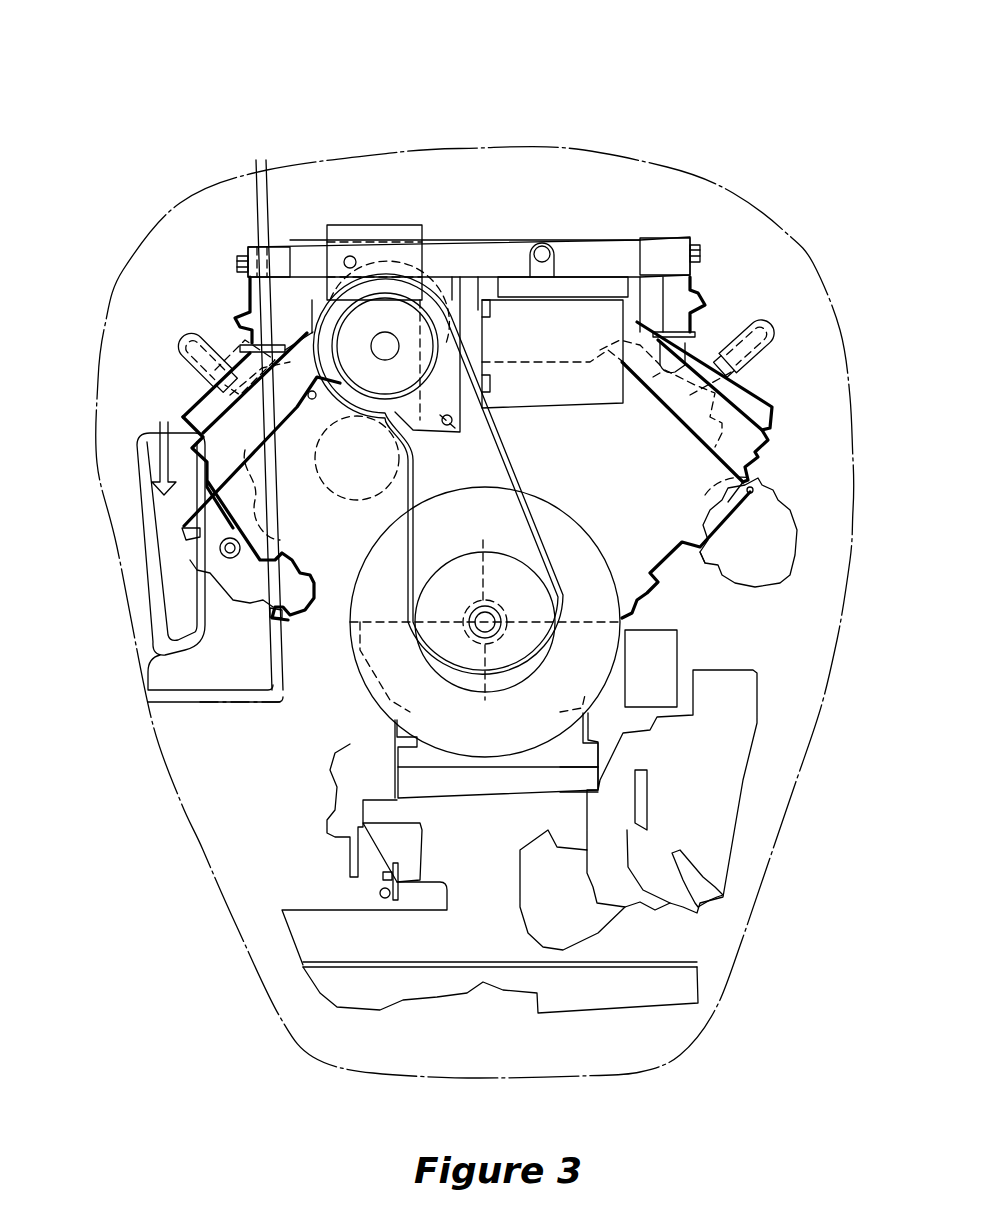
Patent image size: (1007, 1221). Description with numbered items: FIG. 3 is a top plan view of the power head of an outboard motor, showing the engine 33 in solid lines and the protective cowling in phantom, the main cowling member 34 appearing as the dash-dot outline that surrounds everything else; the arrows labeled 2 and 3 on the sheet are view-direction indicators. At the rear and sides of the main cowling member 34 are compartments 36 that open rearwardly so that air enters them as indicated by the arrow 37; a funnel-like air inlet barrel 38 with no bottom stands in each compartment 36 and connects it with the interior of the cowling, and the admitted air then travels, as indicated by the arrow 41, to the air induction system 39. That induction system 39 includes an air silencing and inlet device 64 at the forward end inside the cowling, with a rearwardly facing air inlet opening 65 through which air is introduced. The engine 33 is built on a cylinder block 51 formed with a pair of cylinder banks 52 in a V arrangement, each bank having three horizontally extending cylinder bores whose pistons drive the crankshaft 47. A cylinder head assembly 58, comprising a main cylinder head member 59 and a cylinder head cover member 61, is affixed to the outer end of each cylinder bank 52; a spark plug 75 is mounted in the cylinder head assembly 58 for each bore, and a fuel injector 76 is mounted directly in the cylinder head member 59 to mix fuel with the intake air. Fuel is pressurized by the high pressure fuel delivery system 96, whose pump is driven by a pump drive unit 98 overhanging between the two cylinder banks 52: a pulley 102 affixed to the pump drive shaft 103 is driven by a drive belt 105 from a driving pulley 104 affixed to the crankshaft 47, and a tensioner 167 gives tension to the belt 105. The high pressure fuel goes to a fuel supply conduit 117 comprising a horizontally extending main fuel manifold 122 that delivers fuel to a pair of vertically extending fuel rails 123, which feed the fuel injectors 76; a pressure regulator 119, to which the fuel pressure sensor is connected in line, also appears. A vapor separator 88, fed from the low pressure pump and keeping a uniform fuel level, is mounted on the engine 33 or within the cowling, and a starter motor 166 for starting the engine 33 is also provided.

The section line 2 is at (447, 62).
The section line 3 is at (912, 572).
The engine 33 is at (755, 275).
The main cowling member 34 is at (330, 162).
The compartments 36 is at (253, 720).
The arrow 37 is at (158, 193).
The air inlet barrel 38 is at (125, 465).
The air induction system 39 is at (527, 817).
The arrow 41 is at (200, 457).
The crankshaft 47 is at (490, 690).
The cylinder block 51 is at (676, 580).
The cylinder banks 52 is at (216, 326).
The cylinder head assembly 58 is at (175, 415).
The main cylinder head member 59 is at (757, 460).
The cylinder head cover member 61 is at (770, 400).
The air silencing and inlet device 64 is at (445, 998).
The air inlet opening 65 is at (310, 920).
The spark plug 75 is at (215, 385).
The fuel injector 76 is at (236, 306).
The vapor separator 88 is at (745, 800).
The high pressure fuel delivery system 96 is at (590, 408).
The pump drive unit 98 is at (357, 458).
The pulley 102 is at (395, 380).
The pump drive shaft 103 is at (400, 346).
The driving pulley 104 is at (483, 555).
The drive belt 105 is at (540, 475).
The fuel supply conduit 117 is at (610, 226).
The pressure regulator 119 is at (395, 240).
The main fuel manifold 122 is at (487, 245).
The fuel rails 123 is at (245, 232).
The starter motor 166 is at (363, 500).
The tensioner 167 is at (780, 580).